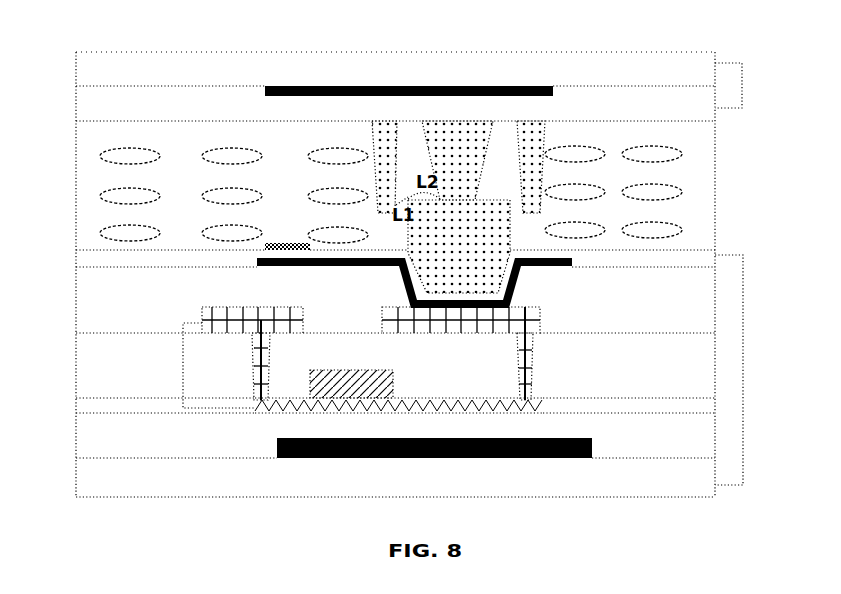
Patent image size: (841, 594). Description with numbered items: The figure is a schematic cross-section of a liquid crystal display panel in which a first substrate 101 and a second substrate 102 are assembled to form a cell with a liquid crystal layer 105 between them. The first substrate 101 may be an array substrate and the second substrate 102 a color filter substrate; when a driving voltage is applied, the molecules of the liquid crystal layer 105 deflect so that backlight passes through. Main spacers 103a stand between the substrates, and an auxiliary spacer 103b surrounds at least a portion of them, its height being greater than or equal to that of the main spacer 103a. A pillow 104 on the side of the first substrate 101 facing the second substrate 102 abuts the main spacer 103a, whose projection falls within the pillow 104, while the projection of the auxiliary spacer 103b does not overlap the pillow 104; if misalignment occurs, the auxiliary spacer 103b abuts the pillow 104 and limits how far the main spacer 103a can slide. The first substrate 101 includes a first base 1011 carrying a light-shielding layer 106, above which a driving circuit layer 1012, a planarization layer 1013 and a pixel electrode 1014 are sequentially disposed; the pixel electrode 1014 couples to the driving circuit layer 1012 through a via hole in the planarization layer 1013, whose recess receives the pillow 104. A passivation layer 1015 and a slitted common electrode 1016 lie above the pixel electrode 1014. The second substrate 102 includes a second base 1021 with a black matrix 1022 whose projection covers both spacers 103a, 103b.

The first substrate 101 is at (743, 363).
The second substrate 102 is at (743, 87).
The second base 1021 is at (76, 67).
The black matrix 1022 is at (265, 92).
The main spacer 103a is at (456, 124).
The auxiliary spacer 103b is at (386, 125).
The pillow 104 is at (476, 200).
The liquid crystal layer 105 is at (715, 187).
The light-shielding layer 106 is at (592, 446).
The first base 1011 is at (76, 473).
The driving circuit layer 1012 is at (183, 358).
The planarization layer 1013 is at (76, 308).
The pixel electrode 1014 is at (256, 263).
The passivation layer 1015 is at (677, 267).
The common electrode 1016 is at (264, 246).